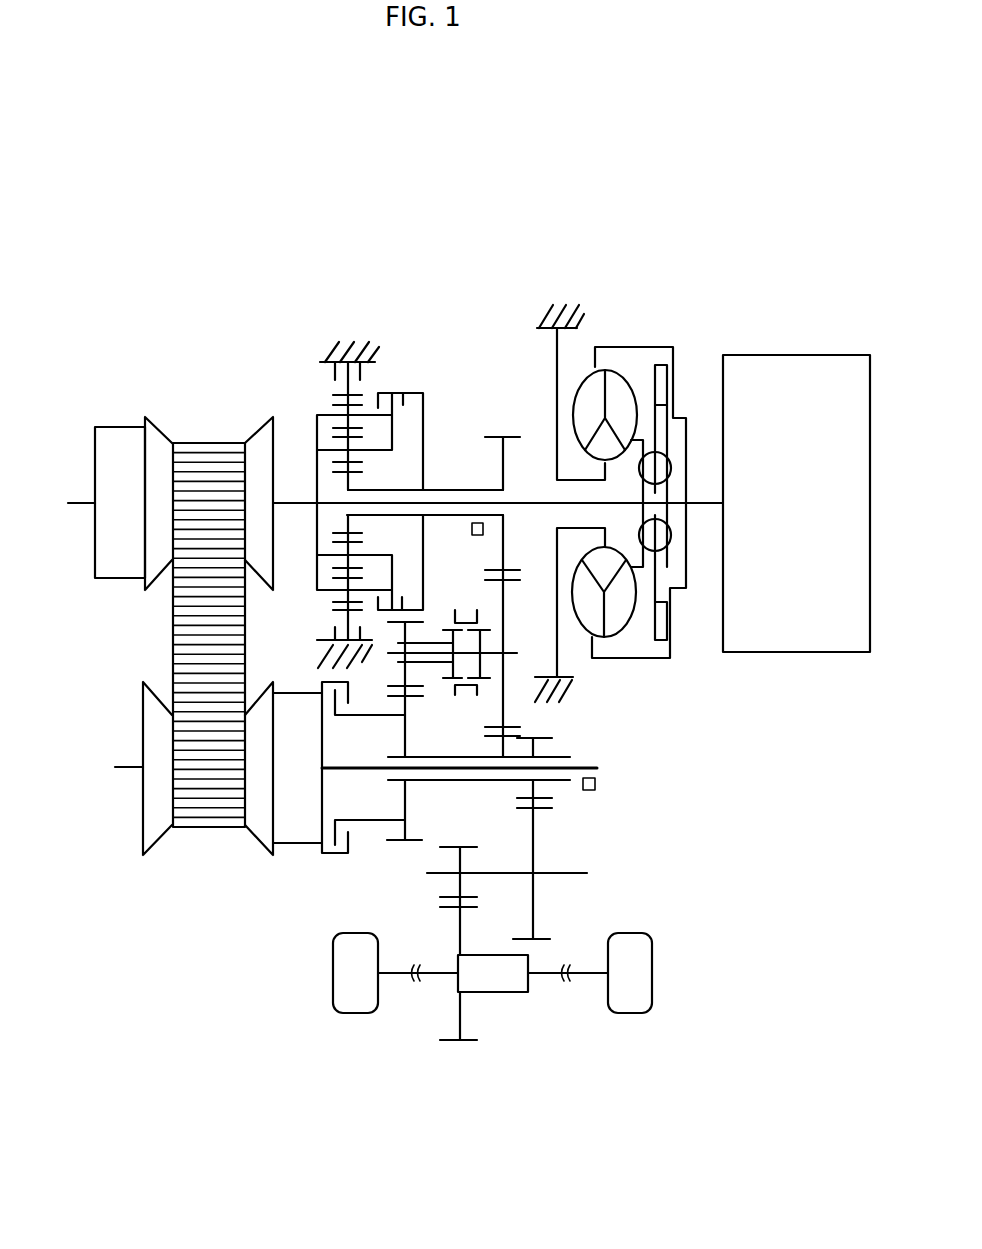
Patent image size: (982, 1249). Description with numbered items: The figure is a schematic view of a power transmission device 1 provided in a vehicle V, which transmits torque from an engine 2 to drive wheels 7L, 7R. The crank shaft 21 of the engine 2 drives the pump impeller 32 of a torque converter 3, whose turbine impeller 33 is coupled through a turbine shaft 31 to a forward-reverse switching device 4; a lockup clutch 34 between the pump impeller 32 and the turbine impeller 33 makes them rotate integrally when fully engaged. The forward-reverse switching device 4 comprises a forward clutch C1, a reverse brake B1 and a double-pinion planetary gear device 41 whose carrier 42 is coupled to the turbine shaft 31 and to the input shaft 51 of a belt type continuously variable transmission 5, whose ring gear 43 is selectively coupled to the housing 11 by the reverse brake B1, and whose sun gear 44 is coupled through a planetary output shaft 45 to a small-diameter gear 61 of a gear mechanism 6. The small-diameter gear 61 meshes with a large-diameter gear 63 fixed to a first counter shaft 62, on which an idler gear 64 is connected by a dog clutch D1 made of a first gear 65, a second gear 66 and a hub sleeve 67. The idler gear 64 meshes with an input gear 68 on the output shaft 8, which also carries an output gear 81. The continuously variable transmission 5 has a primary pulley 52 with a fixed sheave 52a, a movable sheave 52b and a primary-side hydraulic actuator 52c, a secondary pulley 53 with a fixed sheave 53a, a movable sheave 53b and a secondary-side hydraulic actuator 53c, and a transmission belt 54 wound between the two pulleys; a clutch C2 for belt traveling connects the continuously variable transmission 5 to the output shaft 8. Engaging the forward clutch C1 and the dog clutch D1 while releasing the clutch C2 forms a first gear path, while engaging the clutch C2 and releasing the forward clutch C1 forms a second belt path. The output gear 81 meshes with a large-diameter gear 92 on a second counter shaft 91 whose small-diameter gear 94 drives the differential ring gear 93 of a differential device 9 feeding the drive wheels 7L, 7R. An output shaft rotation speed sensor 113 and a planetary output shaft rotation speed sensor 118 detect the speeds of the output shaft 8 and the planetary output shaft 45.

The power transmission device 1 is at (618, 292).
The engine 2 is at (825, 353).
The torque converter 3 is at (687, 612).
The forward-reverse switching device 4 is at (390, 354).
The belt type continuously variable transmission 5 is at (215, 398).
The gear mechanism 6 is at (514, 600).
The output shaft 8 is at (457, 782).
The differential device 9 is at (532, 1013).
The housing 11 is at (347, 340).
The crank shaft 21 is at (703, 500).
The turbine shaft 31 is at (510, 500).
The pump impeller 32 is at (588, 387).
The turbine impeller 33 is at (633, 387).
The lockup clutch 34 is at (664, 383).
The planetary gear device 41 is at (404, 423).
The carrier 42 is at (395, 435).
The ring gear 43 is at (337, 483).
The sun gear 44 is at (357, 528).
The planetary output shaft 45 is at (455, 488).
The input shaft 51 is at (298, 500).
The primary pulley 52 is at (74, 482).
The fixed sheave 52a is at (260, 440).
The movable sheave 52b is at (163, 440).
The primary-side hydraulic actuator 52c is at (118, 430).
The secondary pulley 53 is at (110, 783).
The fixed sheave 53a is at (150, 705).
The movable sheave 53b is at (258, 830).
The secondary-side hydraulic actuator 53c is at (292, 835).
The transmission belt 54 is at (173, 640).
The small-diameter gear 61 is at (490, 435).
The first counter shaft 62 is at (513, 650).
The large-diameter gear 63 is at (493, 733).
The idler gear 64 is at (388, 680).
The first gear 65 is at (482, 683).
The second gear 66 is at (450, 683).
The hub sleeve 67 is at (460, 614).
The input gear 68 is at (392, 845).
The output gear 81 is at (542, 735).
The second counter shaft 91 is at (563, 870).
The large-diameter gear 92 is at (547, 935).
The differential ring gear 93 is at (465, 1042).
The small-diameter gear 94 is at (470, 843).
The output shaft rotation speed sensor 113 is at (590, 790).
The planetary output shaft rotation speed sensor 118 is at (472, 528).
The drive wheel 7L is at (337, 975).
The drive wheel 7R is at (650, 975).
The reverse brake B1 is at (333, 395).
The forward clutch C1 is at (395, 381).
The clutch for belt traveling C2 is at (361, 784).
The dog clutch D1 is at (477, 639).
The vehicle V is at (457, 209).